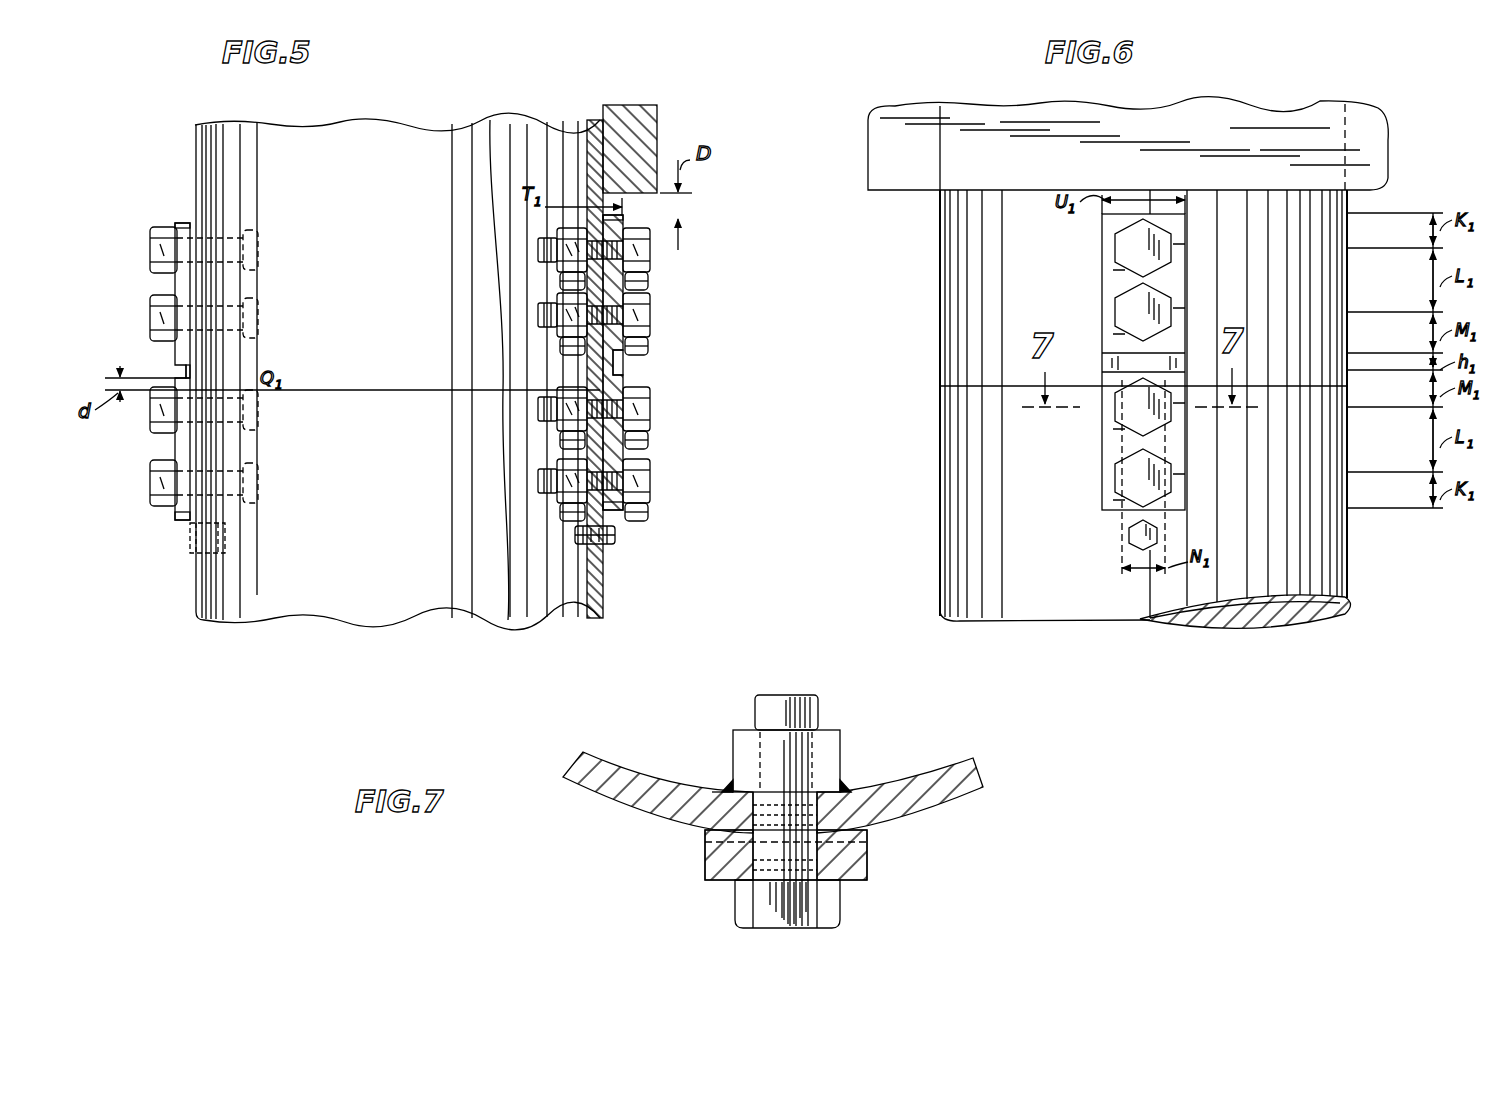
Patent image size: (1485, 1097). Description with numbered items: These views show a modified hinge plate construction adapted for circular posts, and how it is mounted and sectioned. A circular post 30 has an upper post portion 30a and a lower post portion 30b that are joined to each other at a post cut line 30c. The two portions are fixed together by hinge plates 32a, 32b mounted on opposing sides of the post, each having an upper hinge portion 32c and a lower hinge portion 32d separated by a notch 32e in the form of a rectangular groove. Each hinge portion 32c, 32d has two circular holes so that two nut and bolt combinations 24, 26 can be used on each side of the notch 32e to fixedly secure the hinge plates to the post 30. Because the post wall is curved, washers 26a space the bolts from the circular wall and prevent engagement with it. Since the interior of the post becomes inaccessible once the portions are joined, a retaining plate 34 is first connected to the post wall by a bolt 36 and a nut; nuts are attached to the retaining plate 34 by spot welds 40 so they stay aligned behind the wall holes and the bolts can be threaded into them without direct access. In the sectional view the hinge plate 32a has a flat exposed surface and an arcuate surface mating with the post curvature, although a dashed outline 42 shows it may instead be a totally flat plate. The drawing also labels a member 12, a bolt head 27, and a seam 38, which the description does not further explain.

In FIG. 5, the frame flange 12 is at (654, 137).
In FIG. 6, the frame flange 12 is at (1370, 142).
In FIG. 5, the nut 24 is at (653, 262).
In FIG. 6, the nut 24 is at (1118, 475).
In FIG. 7, the nut 24 is at (735, 898).
In FIG. 5, the bolt 26 is at (548, 305).
In FIG. 7, the bolt 26 is at (840, 742).
In FIG. 5, the washer 26a is at (587, 226).
In FIG. 6, the bolt head 27 is at (1130, 302).
In FIG. 5, the circular post 30 is at (379, 381).
In FIG. 6, the circular post 30 is at (1145, 409).
In FIG. 7, the circular post 30 is at (626, 805).
In FIG. 5, the upper post portion 30a is at (356, 125).
In FIG. 6, the upper post portion 30a is at (958, 342).
In FIG. 5, the lower post portion 30b is at (293, 628).
In FIG. 6, the lower post portion 30b is at (958, 478).
In FIG. 5, the post cut line 30c is at (350, 390).
In FIG. 6, the post cut line 30c is at (1320, 388).
In FIG. 5, the hinge plate 32a is at (187, 392).
In FIG. 6, the hinge plate 32a is at (1190, 280).
In FIG. 7, the hinge plate 32a is at (706, 856).
In FIG. 5, the hinge plate 32b is at (624, 390).
In FIG. 5, the upper hinge portion 32c is at (185, 222).
In FIG. 5, the lower hinge portion 32d is at (188, 525).
In FIG. 5, the notch 32e is at (185, 372).
In FIG. 6, the notch 32e is at (1102, 372).
In FIG. 5, the retaining plate 34 is at (598, 578).
In FIG. 6, the retaining plate 34 is at (1118, 527).
In FIG. 7, the retaining plate 34 is at (730, 793).
In FIG. 5, the bolt 36 is at (612, 547).
In FIG. 6, the bolt 36 is at (1128, 542).
In FIG. 5, the shell seam 38 is at (570, 580).
In FIG. 7, the spot weld 40 is at (733, 790).
In FIG. 7, the dashed outline 42 is at (870, 852).